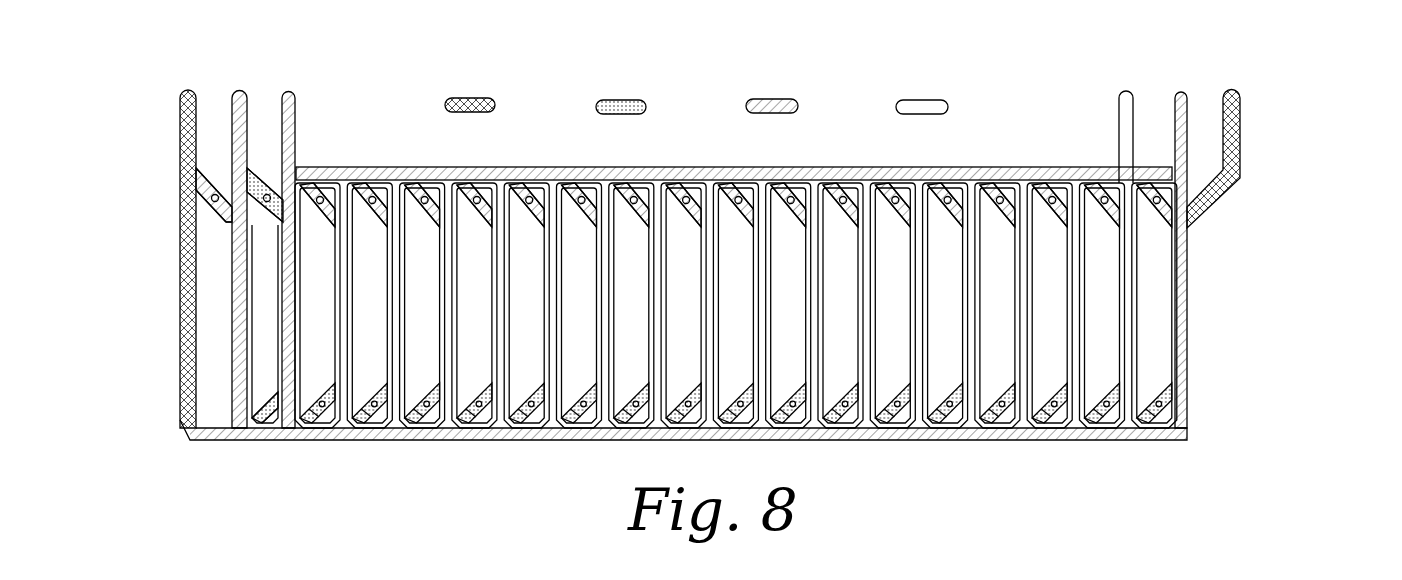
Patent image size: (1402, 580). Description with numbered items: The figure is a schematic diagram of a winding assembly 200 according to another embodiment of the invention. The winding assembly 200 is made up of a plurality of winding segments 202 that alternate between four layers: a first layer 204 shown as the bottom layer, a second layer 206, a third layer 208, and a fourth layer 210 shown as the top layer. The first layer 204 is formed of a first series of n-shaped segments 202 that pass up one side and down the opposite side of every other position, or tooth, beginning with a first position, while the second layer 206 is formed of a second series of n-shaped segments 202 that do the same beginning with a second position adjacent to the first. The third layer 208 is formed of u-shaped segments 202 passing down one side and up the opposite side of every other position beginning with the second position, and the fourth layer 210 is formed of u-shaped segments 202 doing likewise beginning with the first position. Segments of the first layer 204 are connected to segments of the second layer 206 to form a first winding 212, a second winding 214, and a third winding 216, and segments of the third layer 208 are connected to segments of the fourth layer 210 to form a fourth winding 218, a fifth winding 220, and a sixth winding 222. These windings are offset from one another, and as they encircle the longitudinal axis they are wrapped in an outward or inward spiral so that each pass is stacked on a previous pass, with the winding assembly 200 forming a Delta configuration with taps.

The winding assembly 200 is at (1338, 109).
The winding segments 202 is at (292, 446).
The first layer 204 is at (455, 98).
The second layer 206 is at (598, 104).
The third layer 208 is at (787, 100).
The fourth layer 210 is at (948, 100).
The first winding 212 is at (170, 208).
The second winding 214 is at (212, 230).
The third winding 216 is at (213, 171).
The fourth winding 218 is at (258, 226).
The fifth winding 220 is at (255, 346).
The sixth winding 222 is at (308, 225).